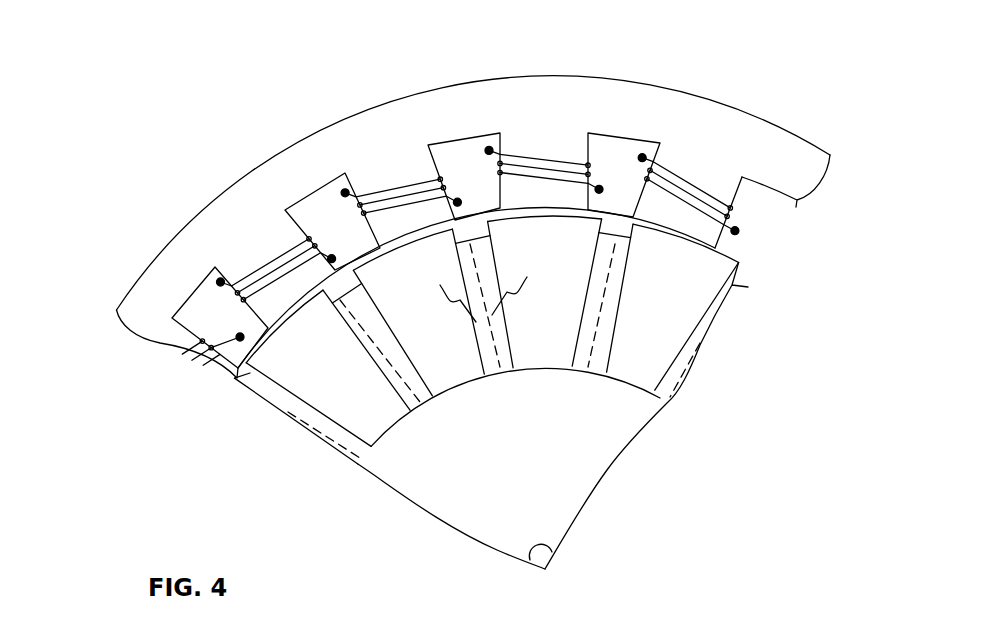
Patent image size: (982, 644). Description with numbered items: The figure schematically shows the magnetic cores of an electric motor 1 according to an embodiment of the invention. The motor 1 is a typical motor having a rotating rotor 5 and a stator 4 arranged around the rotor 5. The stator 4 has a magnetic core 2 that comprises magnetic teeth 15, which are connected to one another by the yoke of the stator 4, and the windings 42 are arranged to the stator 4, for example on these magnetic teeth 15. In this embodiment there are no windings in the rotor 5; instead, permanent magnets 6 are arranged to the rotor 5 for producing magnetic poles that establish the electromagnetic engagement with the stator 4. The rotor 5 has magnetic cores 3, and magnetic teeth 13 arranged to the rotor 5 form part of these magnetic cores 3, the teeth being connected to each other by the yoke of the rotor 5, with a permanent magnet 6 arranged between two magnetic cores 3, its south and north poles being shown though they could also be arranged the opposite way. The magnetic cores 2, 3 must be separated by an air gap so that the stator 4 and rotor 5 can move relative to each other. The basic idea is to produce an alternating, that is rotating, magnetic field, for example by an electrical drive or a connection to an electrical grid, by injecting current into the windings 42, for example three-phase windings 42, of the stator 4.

The electric motor 1 is at (100, 225).
The magnetic core 2 is at (525, 78).
The magnetic core 3 is at (458, 380).
The stator 4 is at (348, 85).
The rotor 5 is at (722, 414).
The permanent magnet 6 is at (509, 382).
The magnetic teeth 13 is at (712, 265).
The magnetic teeth 15 is at (285, 302).
The windings 42 is at (520, 152).